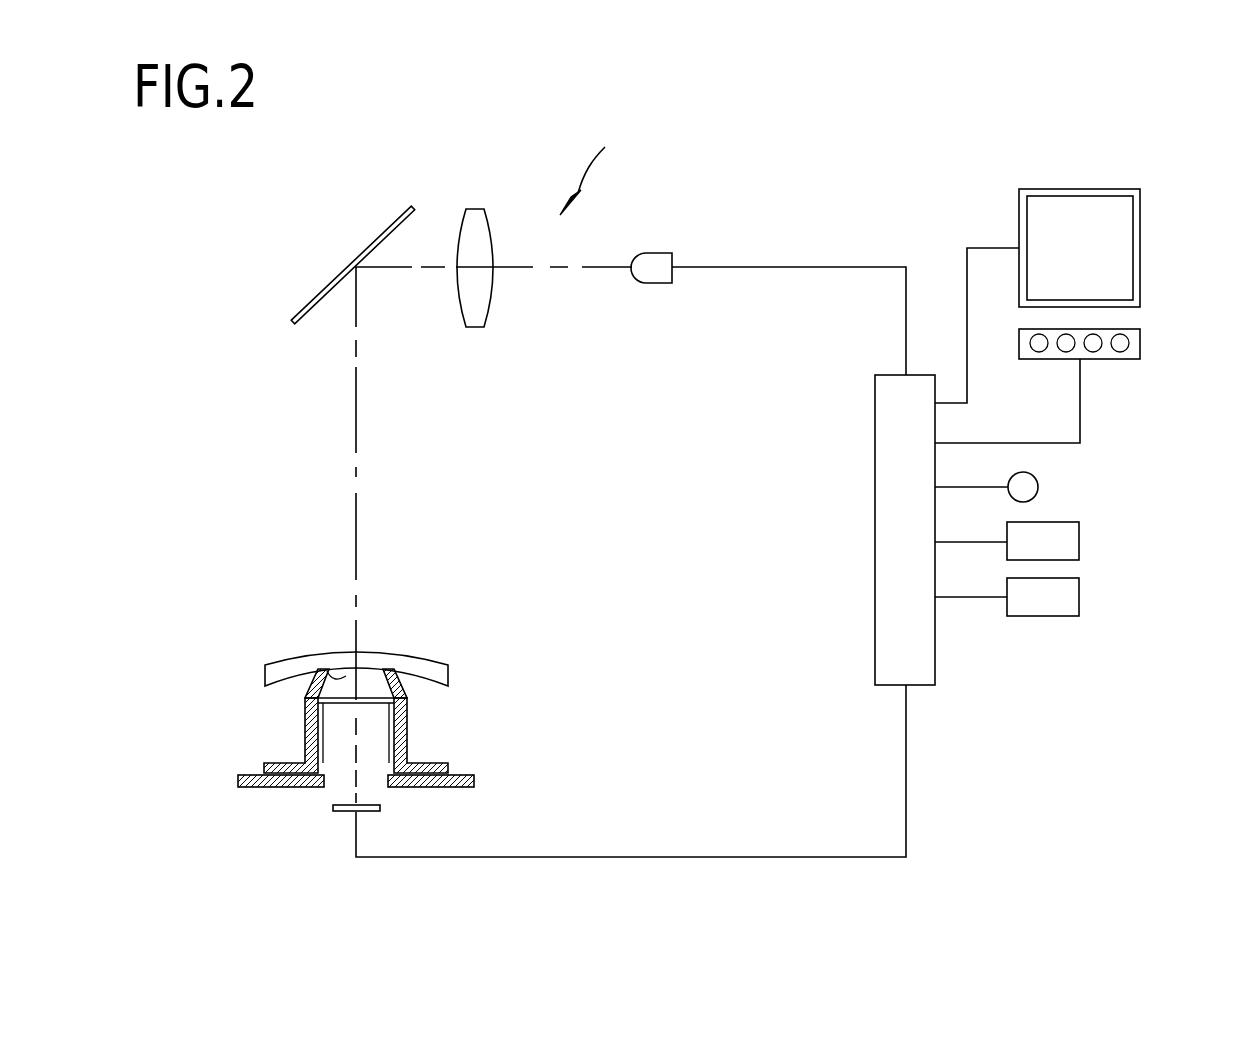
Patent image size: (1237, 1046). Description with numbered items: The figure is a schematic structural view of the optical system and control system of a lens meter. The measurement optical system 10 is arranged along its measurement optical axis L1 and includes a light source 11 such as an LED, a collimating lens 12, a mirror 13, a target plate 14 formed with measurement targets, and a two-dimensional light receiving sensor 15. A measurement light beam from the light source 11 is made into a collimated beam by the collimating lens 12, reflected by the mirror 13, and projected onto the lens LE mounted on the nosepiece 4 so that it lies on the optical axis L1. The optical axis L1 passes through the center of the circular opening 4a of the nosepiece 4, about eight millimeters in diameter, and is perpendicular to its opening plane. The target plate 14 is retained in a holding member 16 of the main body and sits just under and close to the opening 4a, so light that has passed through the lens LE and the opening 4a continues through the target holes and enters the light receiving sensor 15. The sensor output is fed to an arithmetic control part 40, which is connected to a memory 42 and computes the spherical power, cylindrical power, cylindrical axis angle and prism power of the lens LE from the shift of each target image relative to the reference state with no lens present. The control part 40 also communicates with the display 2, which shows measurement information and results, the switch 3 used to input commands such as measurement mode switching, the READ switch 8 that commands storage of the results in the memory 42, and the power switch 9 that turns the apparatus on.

The display 2 is at (1140, 240).
The switch 3 is at (1134, 343).
The nosepiece 4 is at (407, 712).
The opening 4a is at (316, 680).
The READ switch 8 is at (1030, 487).
The power switch 9 is at (1075, 597).
The measurement optical system 10 is at (493, 195).
The light source 11 is at (657, 264).
The collimating lens 12 is at (480, 213).
The mirror 13 is at (392, 222).
The target plate 14 is at (373, 705).
The light receiving sensor 15 is at (335, 813).
The holding member 16 is at (333, 772).
The arithmetic control part 40 is at (875, 430).
The memory 42 is at (1075, 542).
The measurement optical axis L1 is at (358, 512).
The lens LE is at (415, 659).